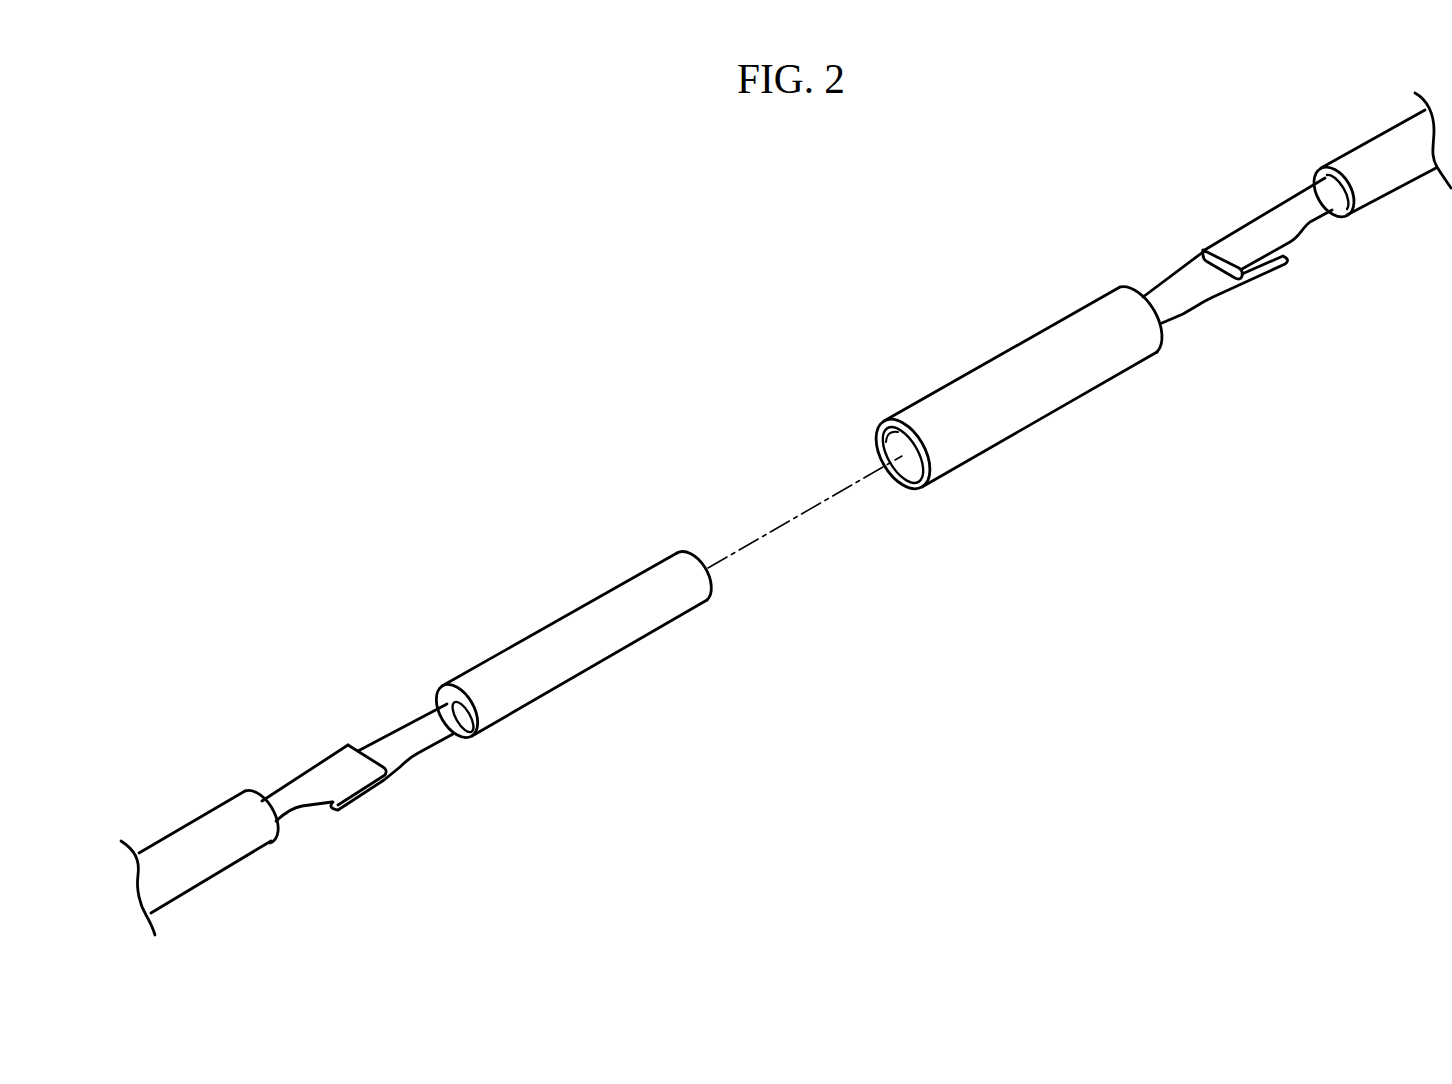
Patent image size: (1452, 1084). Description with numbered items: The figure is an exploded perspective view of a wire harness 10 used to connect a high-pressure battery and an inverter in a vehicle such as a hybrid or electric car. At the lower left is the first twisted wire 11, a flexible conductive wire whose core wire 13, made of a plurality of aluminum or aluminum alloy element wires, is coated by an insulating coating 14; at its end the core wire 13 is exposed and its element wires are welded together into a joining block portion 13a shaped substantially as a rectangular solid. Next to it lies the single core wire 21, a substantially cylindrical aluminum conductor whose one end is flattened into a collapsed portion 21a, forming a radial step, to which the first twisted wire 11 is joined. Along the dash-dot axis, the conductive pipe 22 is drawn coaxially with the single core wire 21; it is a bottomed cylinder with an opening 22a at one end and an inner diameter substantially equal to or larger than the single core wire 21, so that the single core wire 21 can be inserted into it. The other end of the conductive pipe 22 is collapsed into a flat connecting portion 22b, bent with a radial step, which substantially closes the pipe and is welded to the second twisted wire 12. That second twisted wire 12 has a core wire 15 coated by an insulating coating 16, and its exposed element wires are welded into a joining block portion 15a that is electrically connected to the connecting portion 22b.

The wire harness 10 is at (586, 246).
The first twisted wire 11 is at (199, 847).
The second twisted wire 12 is at (1378, 168).
The core wire 13 is at (324, 760).
The joining block portion 13a is at (337, 768).
The insulating coating 14 is at (231, 843).
The core wire 15 is at (1262, 215).
The joining block portion 15a is at (1227, 248).
The insulating coating 16 is at (1392, 178).
The single core wire 21 is at (521, 699).
The collapsed portion 21a is at (393, 770).
The conductive pipe 22 is at (1075, 375).
The opening 22a is at (890, 430).
The connecting portion 22b is at (1227, 287).